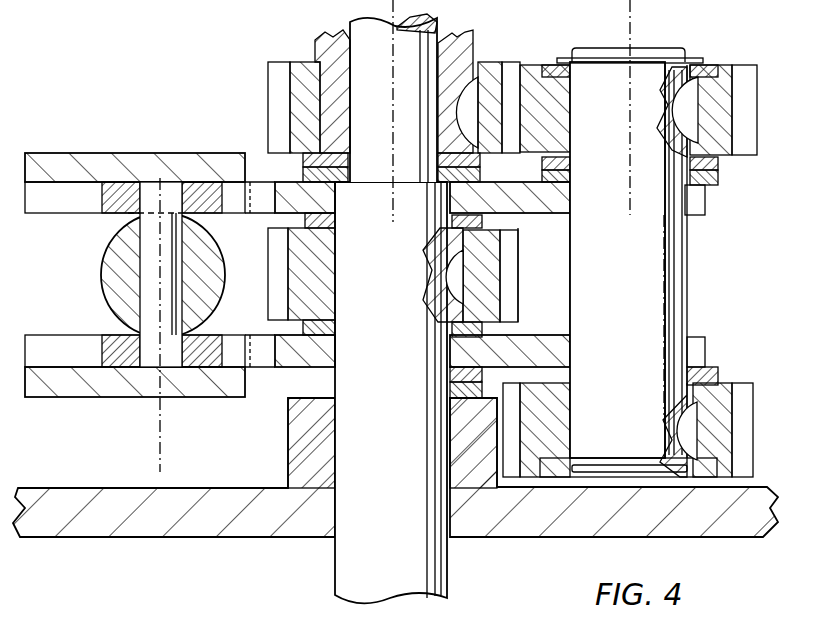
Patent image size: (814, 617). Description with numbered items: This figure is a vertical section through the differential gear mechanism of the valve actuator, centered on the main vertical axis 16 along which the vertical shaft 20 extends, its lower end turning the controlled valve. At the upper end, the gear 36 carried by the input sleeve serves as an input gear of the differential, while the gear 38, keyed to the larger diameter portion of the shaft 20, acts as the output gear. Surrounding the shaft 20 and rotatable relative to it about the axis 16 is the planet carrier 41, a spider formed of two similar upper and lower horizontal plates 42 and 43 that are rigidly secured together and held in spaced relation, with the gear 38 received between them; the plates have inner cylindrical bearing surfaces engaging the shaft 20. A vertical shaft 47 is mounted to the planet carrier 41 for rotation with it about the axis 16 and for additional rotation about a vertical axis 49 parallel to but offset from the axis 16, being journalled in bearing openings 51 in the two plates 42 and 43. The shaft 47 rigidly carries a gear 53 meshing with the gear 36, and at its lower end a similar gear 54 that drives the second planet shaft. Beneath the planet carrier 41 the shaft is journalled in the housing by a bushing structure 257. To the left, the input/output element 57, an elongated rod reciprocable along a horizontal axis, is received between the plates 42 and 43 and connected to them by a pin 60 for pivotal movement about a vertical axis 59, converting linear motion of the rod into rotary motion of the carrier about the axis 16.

The axis 16 is at (390, 60).
The vertical shaft 20 is at (340, 553).
The gear 36 is at (292, 78).
The gear 38 is at (290, 255).
The planet carrier 41 is at (237, 138).
The upper horizontal plate 42 is at (547, 208).
The lower horizontal plate 43 is at (525, 340).
The vertical shaft 47 is at (660, 284).
The vertical axis 49 is at (630, 25).
The bearing opening 51 is at (668, 228).
The gear 53 is at (724, 72).
The gear 54 is at (725, 410).
The input/output element 57 is at (112, 250).
The vertical axis 59 is at (160, 438).
The pin 60 is at (152, 293).
The bushing structure 257 is at (300, 450).